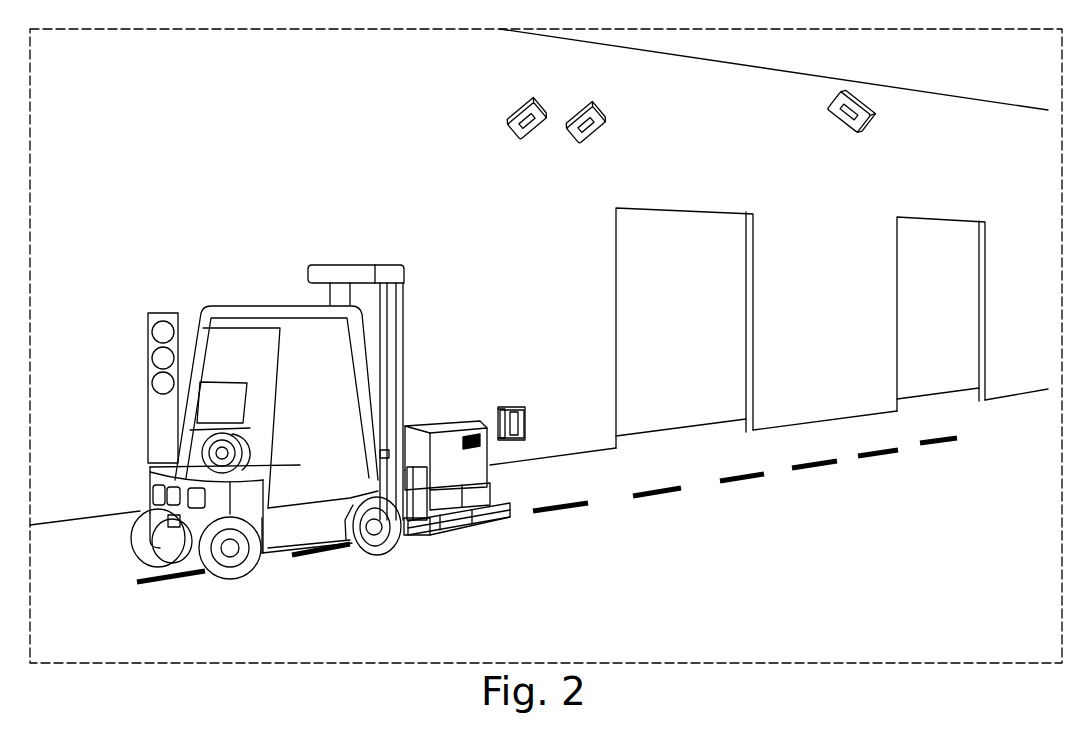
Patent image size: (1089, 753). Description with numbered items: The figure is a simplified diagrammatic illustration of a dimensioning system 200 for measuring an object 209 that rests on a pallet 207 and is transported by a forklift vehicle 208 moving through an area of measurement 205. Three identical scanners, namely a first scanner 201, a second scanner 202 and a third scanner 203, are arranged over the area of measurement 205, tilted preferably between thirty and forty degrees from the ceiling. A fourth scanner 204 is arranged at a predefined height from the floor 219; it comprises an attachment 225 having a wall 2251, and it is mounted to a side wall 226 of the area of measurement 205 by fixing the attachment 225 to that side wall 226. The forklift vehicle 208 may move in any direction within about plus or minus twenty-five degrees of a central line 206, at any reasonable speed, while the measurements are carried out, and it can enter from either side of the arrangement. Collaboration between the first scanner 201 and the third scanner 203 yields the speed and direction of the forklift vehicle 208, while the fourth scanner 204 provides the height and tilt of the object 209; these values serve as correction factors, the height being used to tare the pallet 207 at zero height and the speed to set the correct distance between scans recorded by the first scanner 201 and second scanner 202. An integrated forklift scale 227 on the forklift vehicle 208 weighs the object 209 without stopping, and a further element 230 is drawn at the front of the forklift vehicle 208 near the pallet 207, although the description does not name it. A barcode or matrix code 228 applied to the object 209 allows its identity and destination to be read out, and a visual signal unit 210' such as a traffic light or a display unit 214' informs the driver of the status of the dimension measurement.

The dimensioning system 200 is at (197, 128).
The first scanner 201 is at (513, 108).
The second scanner 202 is at (868, 131).
The third scanner 203 is at (574, 112).
The fourth scanner 204 is at (525, 427).
The area of measurement 205 is at (798, 581).
The central line 206 is at (748, 480).
The pallet 207 is at (490, 520).
The forklift vehicle 208 is at (310, 518).
The object 209 is at (450, 477).
The visual signal unit 210' is at (207, 355).
The display unit 214' is at (166, 430).
The floor 219 is at (920, 497).
The attachment 225 is at (510, 408).
The wall 2251 is at (496, 408).
The side wall 226 is at (715, 168).
The integrated forklift scale 227 is at (430, 537).
The barcode or matrix code 228 is at (483, 442).
The fork carriage 230 is at (413, 533).